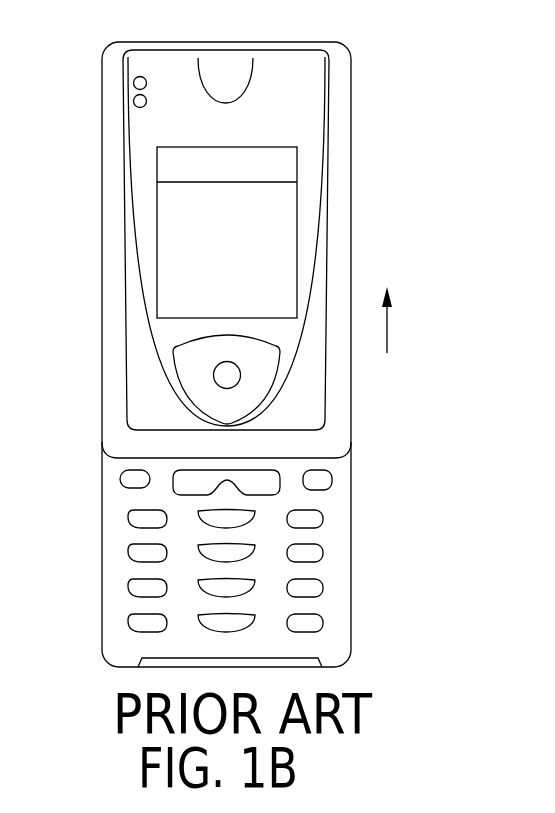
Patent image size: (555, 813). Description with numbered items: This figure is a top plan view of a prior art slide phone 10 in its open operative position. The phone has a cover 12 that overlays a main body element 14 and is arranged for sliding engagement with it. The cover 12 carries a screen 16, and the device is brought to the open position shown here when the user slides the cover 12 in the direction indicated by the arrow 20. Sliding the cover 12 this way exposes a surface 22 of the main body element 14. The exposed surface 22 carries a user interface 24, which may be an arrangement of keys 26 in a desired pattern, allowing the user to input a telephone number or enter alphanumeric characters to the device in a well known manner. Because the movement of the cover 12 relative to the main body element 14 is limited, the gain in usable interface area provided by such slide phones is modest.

The slide phone 10 is at (394, 77).
The cover 12 is at (340, 283).
The main body element 14 is at (351, 563).
The screen 16 is at (278, 225).
The arrow 20 is at (387, 328).
The surface 22 is at (192, 645).
The user interface 24 is at (338, 493).
The keys 26 is at (128, 483).